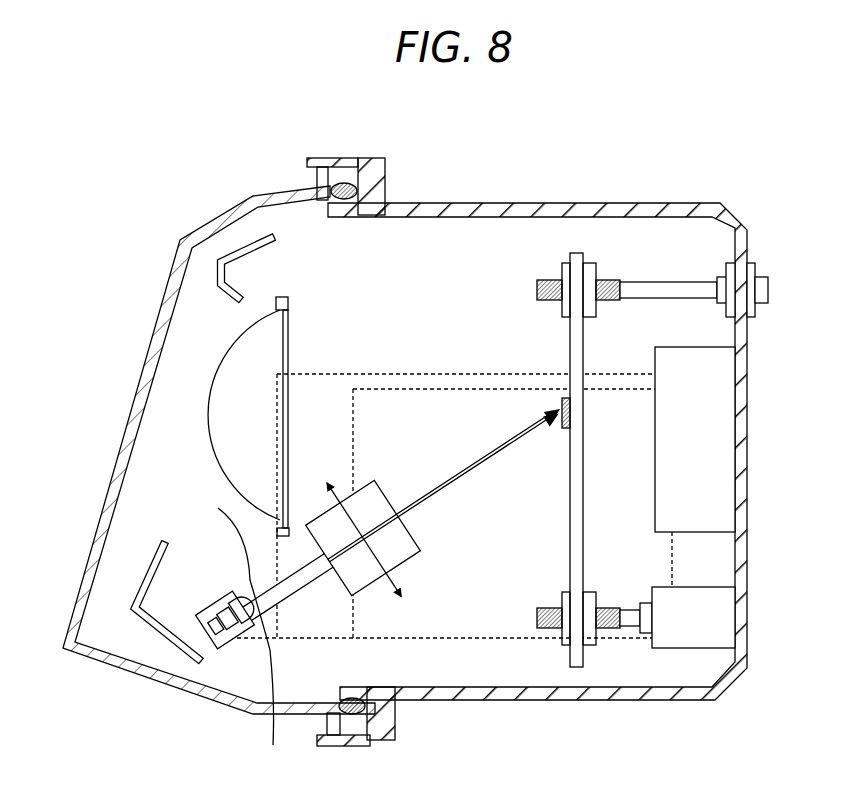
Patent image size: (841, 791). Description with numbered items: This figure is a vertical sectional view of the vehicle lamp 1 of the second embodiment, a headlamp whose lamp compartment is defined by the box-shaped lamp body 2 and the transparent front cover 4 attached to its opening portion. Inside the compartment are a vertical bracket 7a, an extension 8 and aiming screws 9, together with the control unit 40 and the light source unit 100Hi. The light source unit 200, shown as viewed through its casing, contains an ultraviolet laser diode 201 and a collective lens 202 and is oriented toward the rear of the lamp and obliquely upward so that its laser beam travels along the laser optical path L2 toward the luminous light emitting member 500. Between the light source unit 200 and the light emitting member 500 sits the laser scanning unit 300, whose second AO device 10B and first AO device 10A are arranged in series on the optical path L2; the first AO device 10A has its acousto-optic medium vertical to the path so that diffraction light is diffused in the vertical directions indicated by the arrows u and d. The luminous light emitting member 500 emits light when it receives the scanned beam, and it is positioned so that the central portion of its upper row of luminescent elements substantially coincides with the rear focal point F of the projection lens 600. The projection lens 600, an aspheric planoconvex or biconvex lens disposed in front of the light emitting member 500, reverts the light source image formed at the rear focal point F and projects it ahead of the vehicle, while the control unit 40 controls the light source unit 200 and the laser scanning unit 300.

The vehicle lamp 1 is at (789, 158).
The lamp body 2 is at (668, 208).
The front cover 4 is at (267, 193).
The vertical bracket 7a is at (576, 255).
The extension 8 is at (233, 250).
The aiming screws 9 is at (667, 290).
The control unit 40 is at (712, 428).
The light source unit 100Hi is at (362, 335).
The light source unit 200 is at (206, 606).
The ultraviolet laser diode 201 is at (225, 620).
The collective lens 202 is at (230, 642).
The laser scanning unit 300 is at (388, 483).
The first AO device 10A is at (363, 537).
The second AO device 10B is at (287, 587).
The luminous light emitting member 500 is at (445, 486).
The rear focal point F is at (576, 412).
The projection lens 600 is at (243, 350).
The laser optical path L2 is at (230, 619).
The upward direction arrow u is at (345, 510).
The downward direction arrow d is at (382, 567).